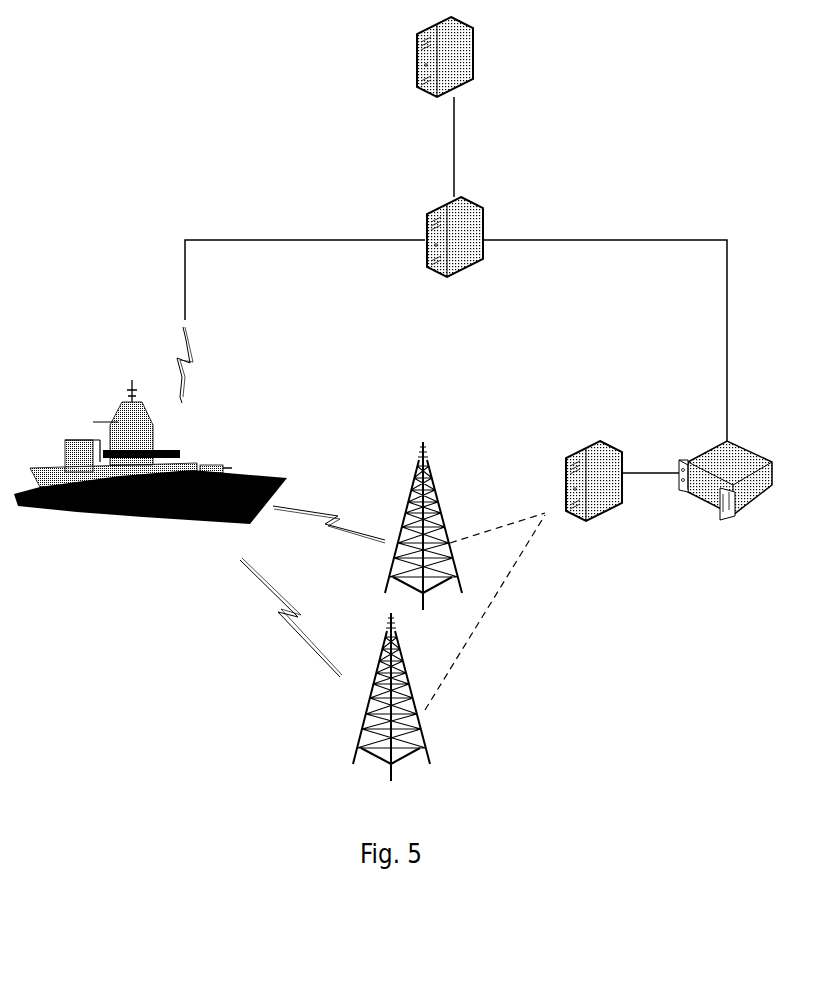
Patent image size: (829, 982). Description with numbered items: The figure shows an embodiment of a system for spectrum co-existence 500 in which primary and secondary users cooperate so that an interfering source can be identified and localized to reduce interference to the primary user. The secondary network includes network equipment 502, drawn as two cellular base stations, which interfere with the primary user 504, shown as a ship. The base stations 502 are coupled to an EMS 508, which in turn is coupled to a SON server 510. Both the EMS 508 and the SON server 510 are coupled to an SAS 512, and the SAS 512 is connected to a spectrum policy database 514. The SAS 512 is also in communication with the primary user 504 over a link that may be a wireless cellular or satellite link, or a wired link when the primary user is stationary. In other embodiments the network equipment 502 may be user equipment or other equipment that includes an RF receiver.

The system for spectrum co-existence 500 is at (227, 59).
The network equipment 502 is at (416, 462).
The primary user 504 is at (153, 520).
The EMS 508 is at (590, 446).
The SON server 510 is at (713, 449).
The SAS 512 is at (425, 216).
The spectrum policy database 514 is at (418, 34).